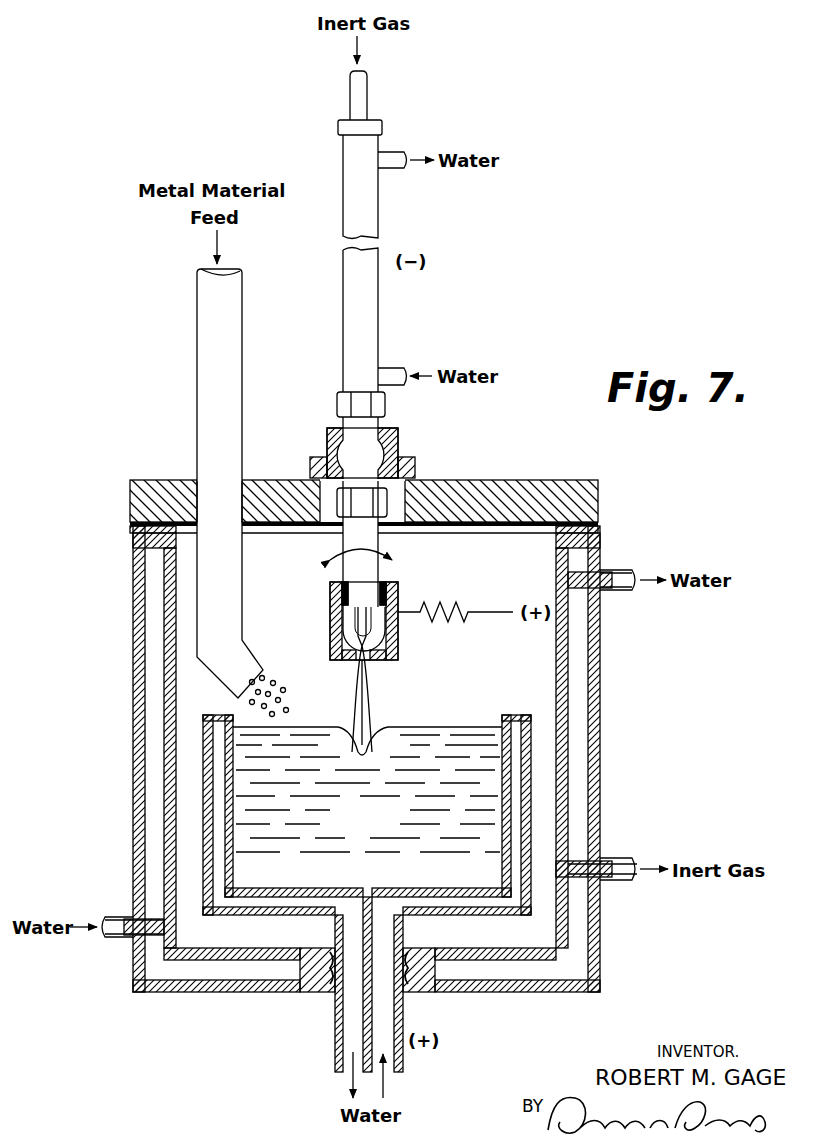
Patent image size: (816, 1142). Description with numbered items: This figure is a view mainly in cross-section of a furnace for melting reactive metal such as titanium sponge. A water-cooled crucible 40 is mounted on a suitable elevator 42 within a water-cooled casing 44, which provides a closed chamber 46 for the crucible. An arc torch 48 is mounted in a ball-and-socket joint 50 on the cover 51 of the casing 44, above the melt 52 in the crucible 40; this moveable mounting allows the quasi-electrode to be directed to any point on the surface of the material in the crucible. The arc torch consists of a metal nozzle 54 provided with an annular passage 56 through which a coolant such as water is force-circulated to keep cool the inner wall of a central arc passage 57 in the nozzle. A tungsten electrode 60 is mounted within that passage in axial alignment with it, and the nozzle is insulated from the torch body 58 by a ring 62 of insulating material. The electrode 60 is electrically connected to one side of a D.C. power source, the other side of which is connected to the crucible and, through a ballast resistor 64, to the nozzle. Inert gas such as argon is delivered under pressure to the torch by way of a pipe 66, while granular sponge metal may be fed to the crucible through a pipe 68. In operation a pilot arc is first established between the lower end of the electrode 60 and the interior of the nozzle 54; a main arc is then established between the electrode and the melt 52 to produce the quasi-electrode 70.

The water-cooled crucible 40 is at (283, 911).
The elevator 42 is at (336, 1043).
The water-cooled casing 44 is at (138, 703).
The closed chamber 46 is at (273, 557).
The arc torch 48 is at (402, 593).
The ball-and-socket joint 50 is at (399, 443).
The cover 51 is at (527, 497).
The melt 52 is at (468, 750).
The metal nozzle 54 is at (398, 646).
The annular passage 56 is at (345, 656).
The central arc passage 57 is at (372, 662).
The torch body 58 is at (360, 575).
The tungsten electrode 60 is at (365, 626).
The ring of insulating material 62 is at (338, 598).
The ballast resistor 64 is at (455, 612).
The pipe 66 is at (360, 97).
The pipe 68 is at (215, 390).
The quasi-electrode 70 is at (358, 698).